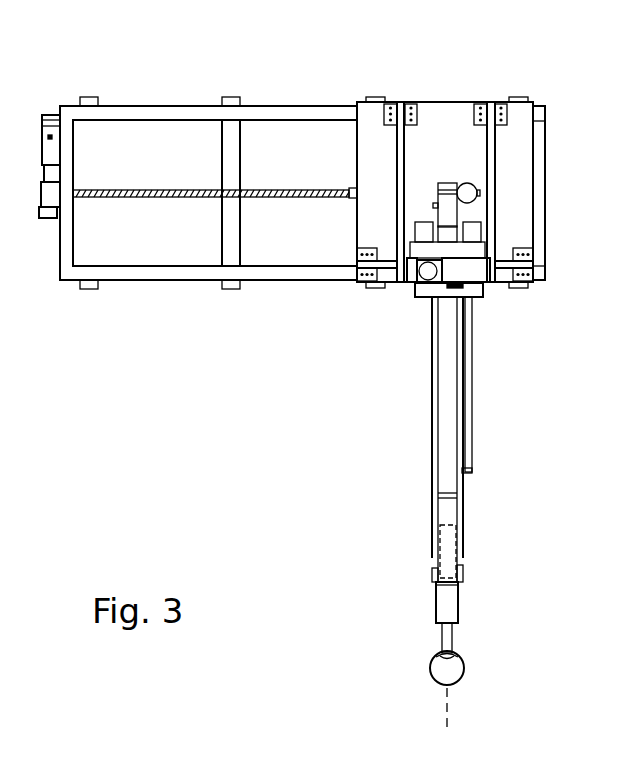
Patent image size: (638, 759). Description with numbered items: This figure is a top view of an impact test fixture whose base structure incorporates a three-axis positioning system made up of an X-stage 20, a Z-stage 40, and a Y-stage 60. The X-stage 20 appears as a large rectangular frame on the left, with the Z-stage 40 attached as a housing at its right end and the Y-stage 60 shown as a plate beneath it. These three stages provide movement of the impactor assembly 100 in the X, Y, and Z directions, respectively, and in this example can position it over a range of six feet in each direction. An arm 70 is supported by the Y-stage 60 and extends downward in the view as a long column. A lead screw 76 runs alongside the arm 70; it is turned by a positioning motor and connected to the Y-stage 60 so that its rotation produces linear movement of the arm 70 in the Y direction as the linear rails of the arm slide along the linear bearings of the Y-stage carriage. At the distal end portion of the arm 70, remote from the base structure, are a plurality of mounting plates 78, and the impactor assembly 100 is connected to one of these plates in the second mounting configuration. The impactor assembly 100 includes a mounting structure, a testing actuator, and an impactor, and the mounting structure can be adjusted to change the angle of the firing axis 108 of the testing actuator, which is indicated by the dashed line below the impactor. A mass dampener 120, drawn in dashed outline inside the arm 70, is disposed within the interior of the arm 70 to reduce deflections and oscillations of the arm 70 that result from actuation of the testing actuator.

The X-stage 20 is at (160, 300).
The Z-stage 40 is at (456, 100).
The Y-stage 60 is at (481, 302).
The arm 70 is at (443, 410).
The lead screw 76 is at (472, 402).
The mounting plates 78 is at (433, 572).
The impactor assembly 100 is at (429, 641).
The firing axis 108 is at (448, 715).
The mass dampener 120 is at (463, 523).